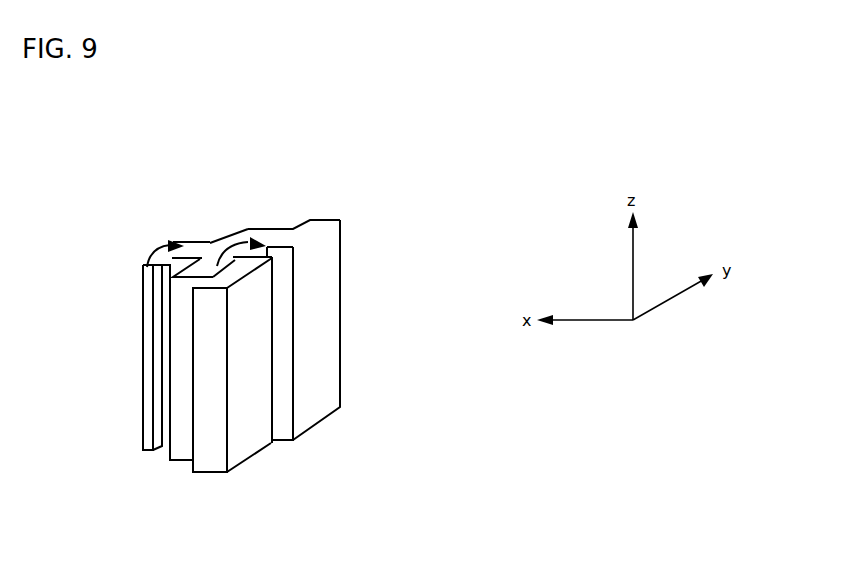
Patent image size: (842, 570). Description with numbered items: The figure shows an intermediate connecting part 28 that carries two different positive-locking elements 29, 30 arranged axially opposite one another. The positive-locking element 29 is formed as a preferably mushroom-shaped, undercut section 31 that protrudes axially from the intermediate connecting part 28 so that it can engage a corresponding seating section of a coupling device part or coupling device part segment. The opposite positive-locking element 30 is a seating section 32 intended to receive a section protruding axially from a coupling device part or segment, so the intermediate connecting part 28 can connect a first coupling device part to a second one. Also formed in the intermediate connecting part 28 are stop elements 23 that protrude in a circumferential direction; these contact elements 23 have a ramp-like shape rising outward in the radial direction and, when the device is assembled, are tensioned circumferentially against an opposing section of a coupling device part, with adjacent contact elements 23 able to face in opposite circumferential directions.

The stop elements 23 is at (323, 303).
The intermediate connecting part 28 is at (351, 193).
The positive-locking element 29 is at (189, 225).
The positive-locking element 30 is at (288, 452).
The undercut section 31 is at (165, 247).
The seating section 32 is at (295, 442).